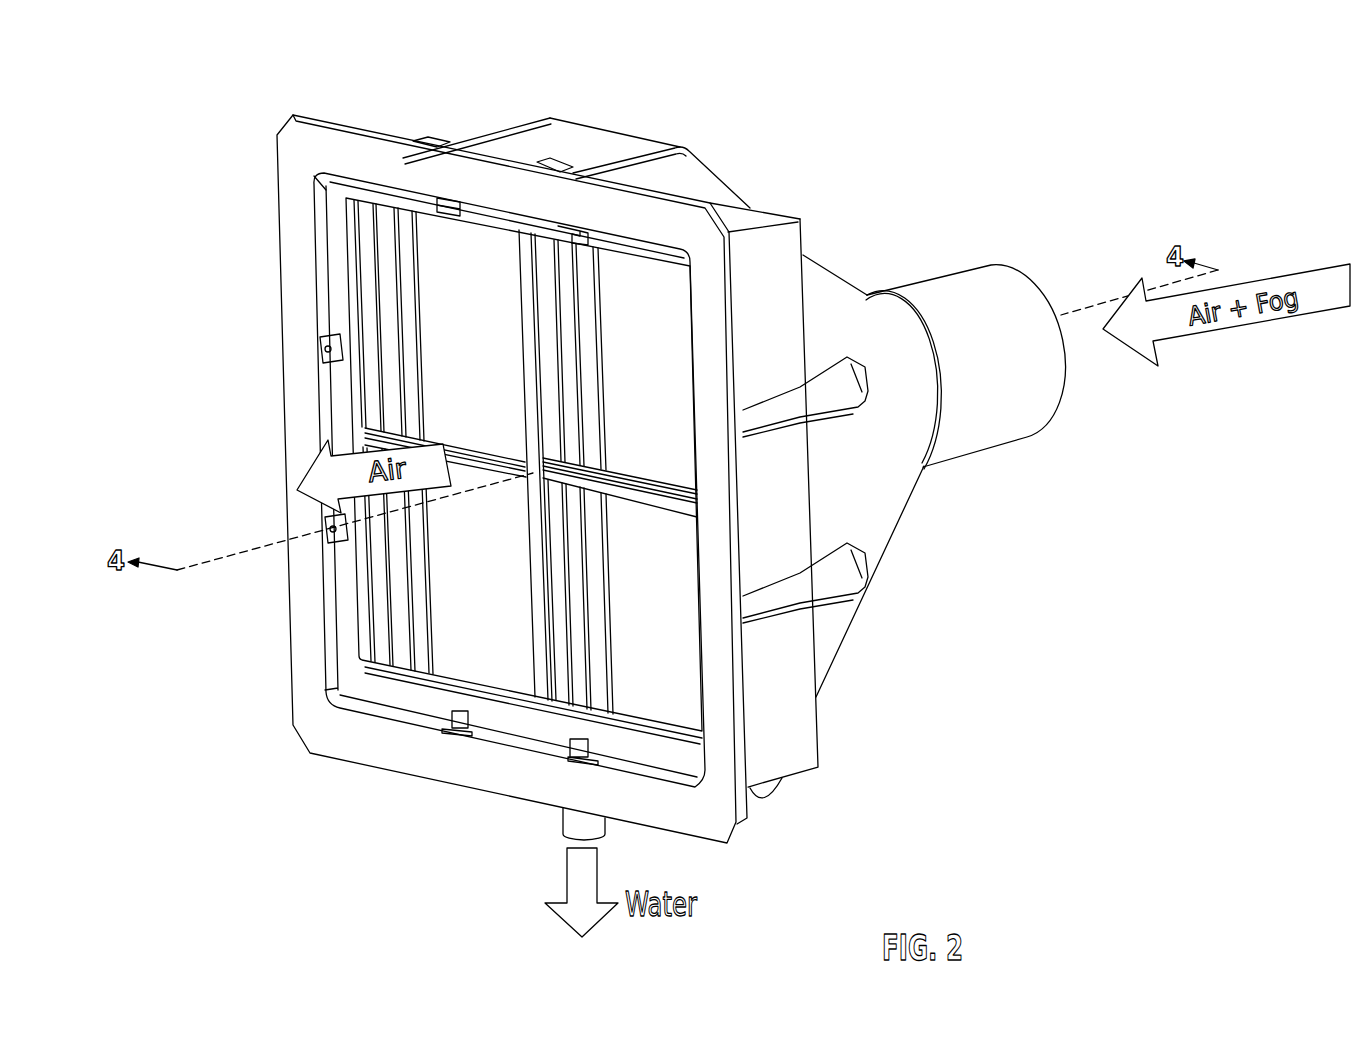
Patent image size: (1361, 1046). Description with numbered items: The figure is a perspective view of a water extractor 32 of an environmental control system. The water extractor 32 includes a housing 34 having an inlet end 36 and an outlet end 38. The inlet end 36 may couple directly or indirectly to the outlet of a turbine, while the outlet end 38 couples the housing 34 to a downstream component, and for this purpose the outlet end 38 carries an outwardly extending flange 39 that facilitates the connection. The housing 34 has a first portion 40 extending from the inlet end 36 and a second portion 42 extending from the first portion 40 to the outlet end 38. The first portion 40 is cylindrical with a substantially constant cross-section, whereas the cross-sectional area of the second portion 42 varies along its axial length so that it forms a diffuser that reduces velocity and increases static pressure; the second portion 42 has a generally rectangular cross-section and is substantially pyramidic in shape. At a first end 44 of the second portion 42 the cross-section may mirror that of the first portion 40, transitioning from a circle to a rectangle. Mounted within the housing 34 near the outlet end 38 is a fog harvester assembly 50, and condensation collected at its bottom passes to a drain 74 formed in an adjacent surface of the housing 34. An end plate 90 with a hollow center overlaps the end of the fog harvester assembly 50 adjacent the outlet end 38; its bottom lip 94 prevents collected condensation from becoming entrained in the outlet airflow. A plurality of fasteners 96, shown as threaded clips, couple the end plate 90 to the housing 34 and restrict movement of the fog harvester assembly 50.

The water extractor 32 is at (235, 70).
The housing 34 is at (838, 262).
The inlet end 36 is at (1076, 378).
The outlet end 38 is at (368, 410).
The outwardly extending flange 39 is at (291, 160).
The first portion 40 is at (961, 250).
The second portion 42 is at (768, 195).
The first end 44 is at (938, 430).
The fog harvester assembly 50 is at (408, 228).
The drain 74 is at (565, 827).
The end plate 90 is at (337, 238).
The bottom lip 94 is at (386, 697).
The fasteners 96 is at (584, 232).